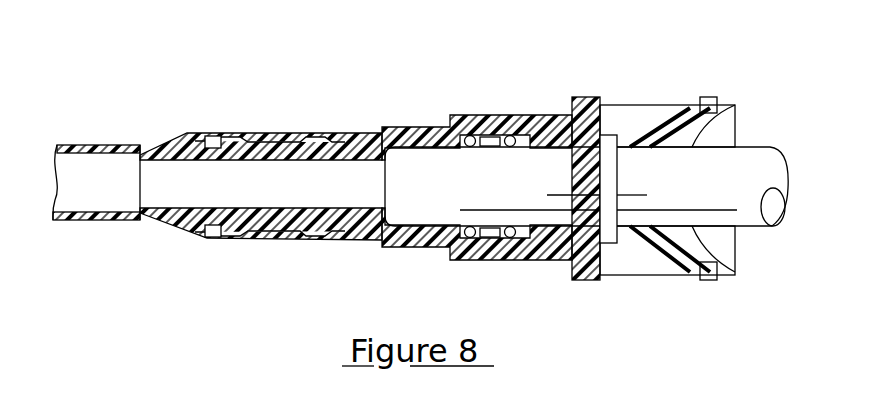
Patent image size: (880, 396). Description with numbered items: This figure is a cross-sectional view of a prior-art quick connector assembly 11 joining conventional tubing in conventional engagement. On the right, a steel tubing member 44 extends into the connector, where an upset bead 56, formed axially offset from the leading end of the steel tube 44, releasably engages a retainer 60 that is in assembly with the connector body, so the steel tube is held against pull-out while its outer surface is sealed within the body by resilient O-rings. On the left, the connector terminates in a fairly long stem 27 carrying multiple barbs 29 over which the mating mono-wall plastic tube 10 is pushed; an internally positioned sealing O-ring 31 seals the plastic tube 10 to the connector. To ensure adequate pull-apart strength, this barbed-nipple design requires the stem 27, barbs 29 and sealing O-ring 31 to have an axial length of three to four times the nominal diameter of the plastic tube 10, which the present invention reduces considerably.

The mono-wall plastic tube 10 is at (108, 140).
The quick connector assembly 11 is at (338, 94).
The stem 27 is at (185, 131).
The barbs 29 is at (337, 133).
The sealing O-ring 31 is at (217, 228).
The steel tubing member 44 is at (760, 140).
The upset bead 56 is at (609, 158).
The retainer 60 is at (668, 108).